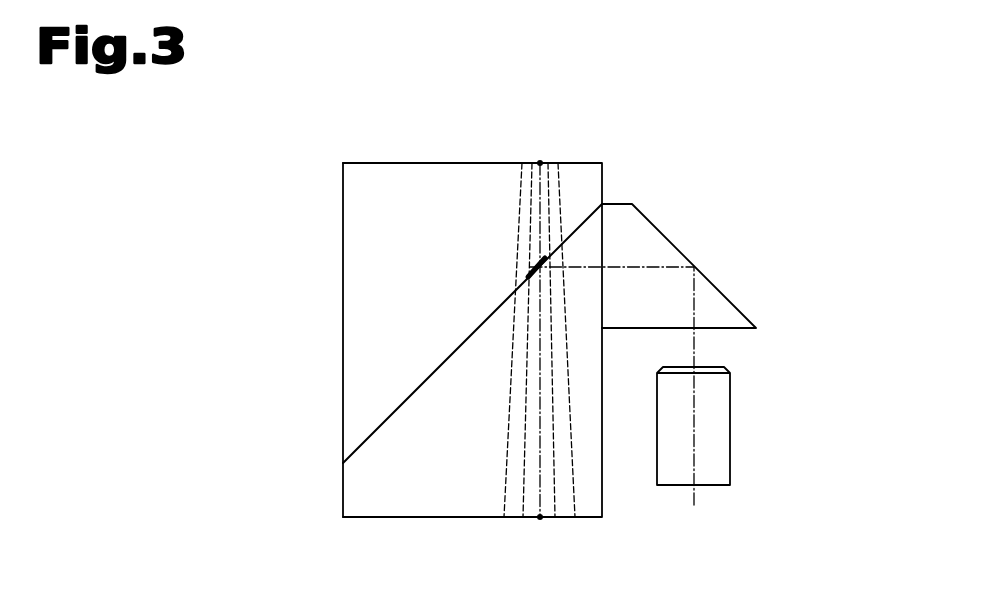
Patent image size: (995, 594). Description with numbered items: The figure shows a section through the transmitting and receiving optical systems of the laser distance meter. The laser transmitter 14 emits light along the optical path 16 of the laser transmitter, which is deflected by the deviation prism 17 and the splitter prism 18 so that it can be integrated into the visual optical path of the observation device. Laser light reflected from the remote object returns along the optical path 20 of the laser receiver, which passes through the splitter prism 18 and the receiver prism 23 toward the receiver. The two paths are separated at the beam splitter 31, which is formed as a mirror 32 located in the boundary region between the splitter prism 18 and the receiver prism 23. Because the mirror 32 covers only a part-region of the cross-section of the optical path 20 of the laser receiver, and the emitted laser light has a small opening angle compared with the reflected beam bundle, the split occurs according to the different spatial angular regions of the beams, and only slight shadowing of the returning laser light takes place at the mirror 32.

The laser transmitter 14 is at (738, 441).
The optical path of the laser transmitter 16 is at (695, 346).
The deviation prism 17 is at (686, 230).
The splitter prism 18 is at (316, 498).
The optical path of the laser receiver 20 is at (540, 217).
The receiver prism 23 is at (312, 289).
The beam splitter 31 is at (442, 364).
The mirror 32 is at (535, 268).